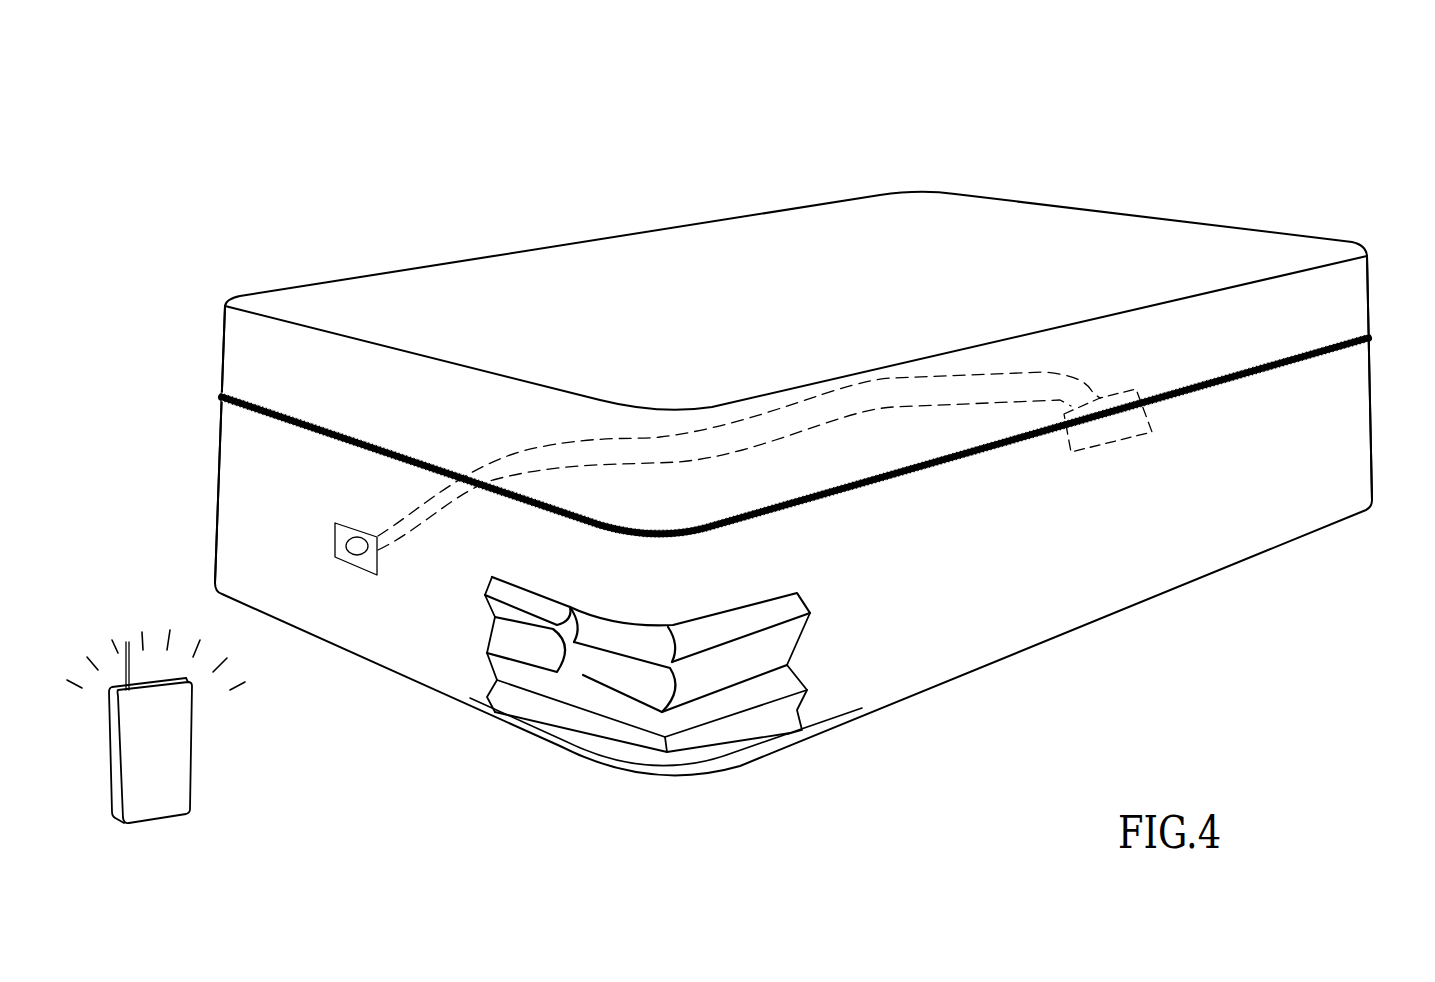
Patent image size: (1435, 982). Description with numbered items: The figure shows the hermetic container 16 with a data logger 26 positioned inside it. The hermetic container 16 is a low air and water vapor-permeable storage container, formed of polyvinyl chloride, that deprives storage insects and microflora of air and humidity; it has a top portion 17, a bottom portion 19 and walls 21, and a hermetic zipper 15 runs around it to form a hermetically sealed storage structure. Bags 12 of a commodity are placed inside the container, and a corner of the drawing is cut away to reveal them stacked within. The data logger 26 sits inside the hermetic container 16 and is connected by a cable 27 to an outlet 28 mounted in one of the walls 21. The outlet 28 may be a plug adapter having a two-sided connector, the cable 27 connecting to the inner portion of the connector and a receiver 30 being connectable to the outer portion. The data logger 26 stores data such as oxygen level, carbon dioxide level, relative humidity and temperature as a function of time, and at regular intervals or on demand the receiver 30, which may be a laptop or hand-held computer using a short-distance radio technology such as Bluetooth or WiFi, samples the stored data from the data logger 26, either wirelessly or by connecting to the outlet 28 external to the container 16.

The bags 12 is at (607, 673).
The hermetic zipper 15 is at (327, 427).
The hermetic container 16 is at (1182, 158).
The top portion 17 is at (966, 222).
The bottom portion 19 is at (1198, 584).
The walls 21 is at (213, 502).
The data logger 26 is at (1160, 437).
The cable 27 is at (540, 447).
The outlet 28 is at (348, 575).
The receiver 30 is at (193, 725).